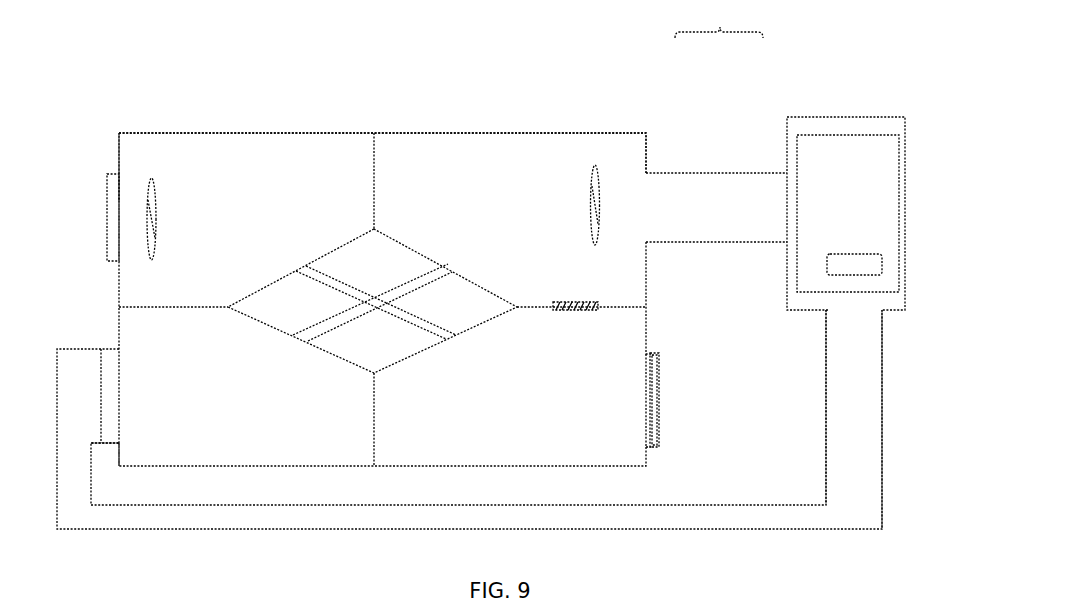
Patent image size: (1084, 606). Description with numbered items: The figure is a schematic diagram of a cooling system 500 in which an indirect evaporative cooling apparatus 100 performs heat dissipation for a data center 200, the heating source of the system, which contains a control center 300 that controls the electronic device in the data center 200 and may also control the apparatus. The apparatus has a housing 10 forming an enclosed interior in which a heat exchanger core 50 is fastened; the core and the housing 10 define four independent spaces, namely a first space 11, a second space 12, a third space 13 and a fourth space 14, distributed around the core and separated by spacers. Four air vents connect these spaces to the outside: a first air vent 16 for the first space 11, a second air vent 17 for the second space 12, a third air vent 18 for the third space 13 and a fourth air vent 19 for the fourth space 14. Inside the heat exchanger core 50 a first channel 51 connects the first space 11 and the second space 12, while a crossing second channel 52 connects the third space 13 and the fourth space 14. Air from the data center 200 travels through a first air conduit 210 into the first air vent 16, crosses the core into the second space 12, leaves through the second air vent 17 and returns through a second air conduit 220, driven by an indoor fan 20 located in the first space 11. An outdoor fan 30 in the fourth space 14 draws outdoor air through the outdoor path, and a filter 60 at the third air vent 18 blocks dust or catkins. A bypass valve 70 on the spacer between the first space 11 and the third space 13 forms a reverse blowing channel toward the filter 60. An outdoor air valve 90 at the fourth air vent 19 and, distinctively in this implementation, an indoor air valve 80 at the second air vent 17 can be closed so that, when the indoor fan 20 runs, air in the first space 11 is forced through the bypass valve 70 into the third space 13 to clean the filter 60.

The housing 10 is at (413, 133).
The first space 11 is at (508, 152).
The second space 12 is at (262, 437).
The third space 13 is at (465, 420).
The fourth space 14 is at (250, 158).
The first air vent 16 is at (647, 217).
The second air vent 17 is at (120, 443).
The third air vent 18 is at (648, 400).
The fourth air vent 19 is at (122, 188).
The indoor fan 20 is at (597, 192).
The outdoor fan 30 is at (152, 197).
The heat exchanger core 50 is at (387, 237).
The first channel 51 is at (435, 265).
The second channel 52 is at (450, 337).
The filter 60 is at (658, 395).
The bypass valve 70 is at (575, 303).
The indoor air valve 80 is at (105, 378).
The outdoor air valve 90 is at (118, 220).
The indirect evaporative cooling apparatus 100 is at (641, 115).
The data center 200 is at (800, 119).
The first air conduit 210 is at (697, 193).
The second air conduit 220 is at (873, 402).
The control center 300 is at (873, 267).
The cooling system 500 is at (719, 19).